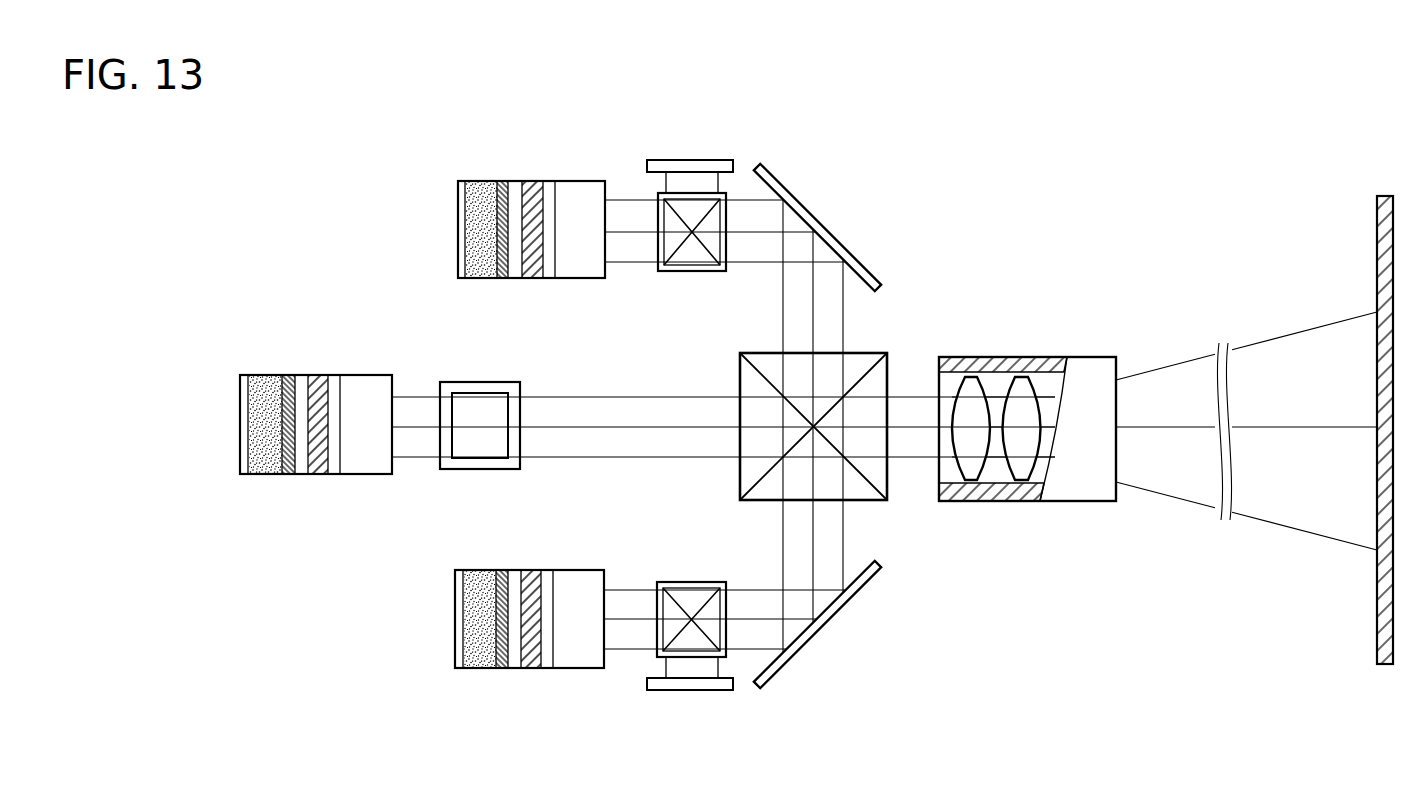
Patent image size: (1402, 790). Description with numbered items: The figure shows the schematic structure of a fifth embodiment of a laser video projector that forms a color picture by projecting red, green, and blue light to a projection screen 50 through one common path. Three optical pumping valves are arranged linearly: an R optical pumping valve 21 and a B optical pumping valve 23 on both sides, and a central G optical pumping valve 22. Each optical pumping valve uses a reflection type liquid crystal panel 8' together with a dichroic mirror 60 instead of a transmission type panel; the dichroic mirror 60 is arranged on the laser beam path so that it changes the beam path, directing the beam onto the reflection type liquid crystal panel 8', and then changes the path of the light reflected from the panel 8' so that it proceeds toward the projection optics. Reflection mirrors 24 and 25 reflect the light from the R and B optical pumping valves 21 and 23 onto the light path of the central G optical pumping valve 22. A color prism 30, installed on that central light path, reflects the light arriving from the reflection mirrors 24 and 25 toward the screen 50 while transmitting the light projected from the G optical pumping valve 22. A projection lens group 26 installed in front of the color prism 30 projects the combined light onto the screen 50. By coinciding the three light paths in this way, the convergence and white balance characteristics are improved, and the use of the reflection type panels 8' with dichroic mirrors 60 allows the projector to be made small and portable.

The R optical pumping valve 21 is at (546, 180).
The G optical pumping valve 22 is at (343, 374).
The B optical pumping valve 23 is at (568, 569).
The reflection type liquid crystal panel 8' is at (592, 423).
The dichroic mirror 60 is at (692, 272).
The reflection mirror 24 is at (868, 268).
The reflection mirror 25 is at (767, 682).
The color prism 30 is at (898, 508).
The projection lens group 26 is at (1077, 503).
The projection screen 50 is at (1377, 238).